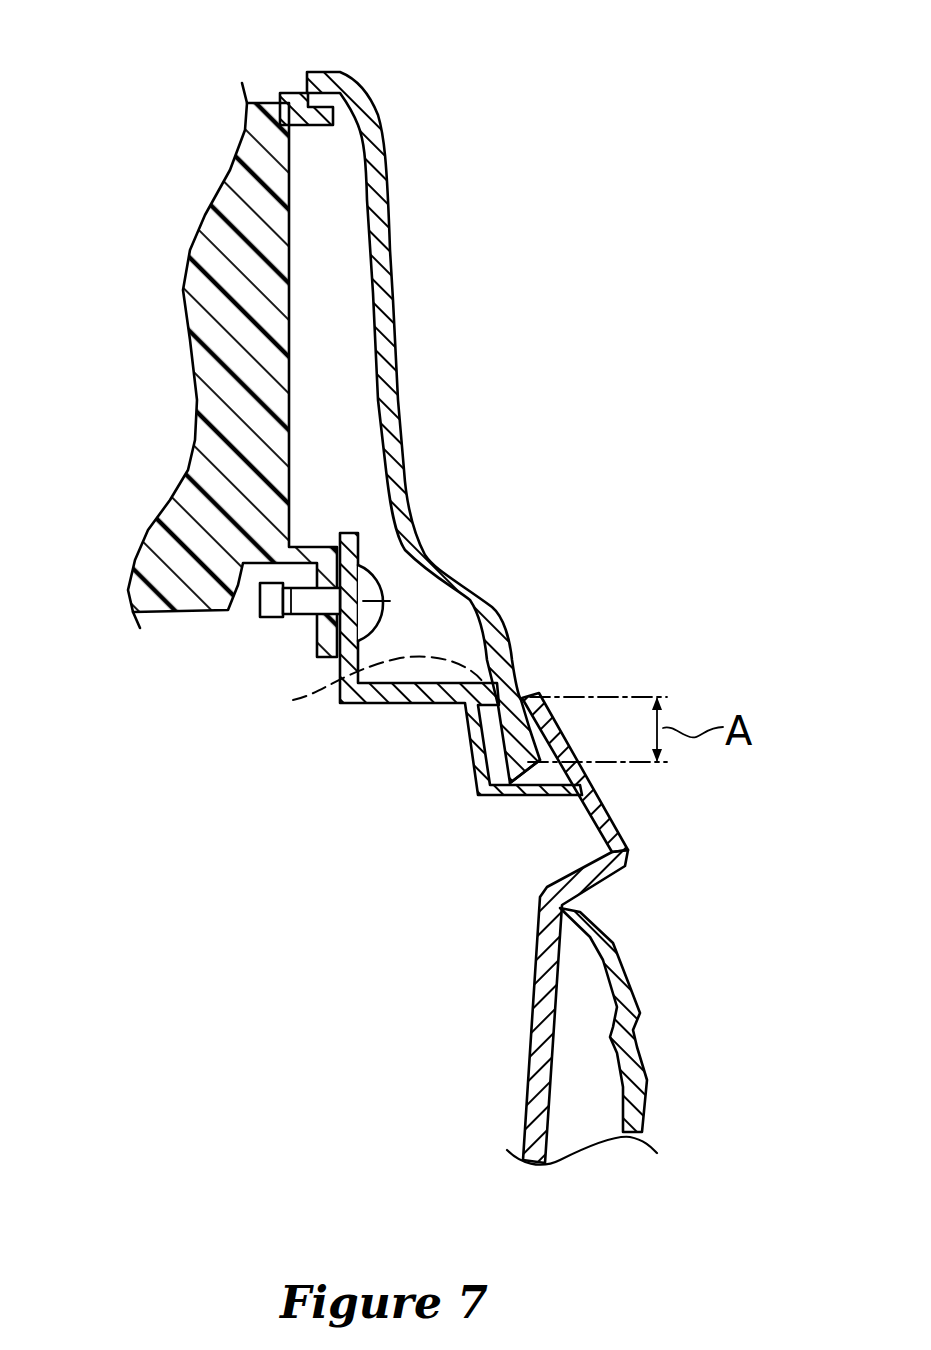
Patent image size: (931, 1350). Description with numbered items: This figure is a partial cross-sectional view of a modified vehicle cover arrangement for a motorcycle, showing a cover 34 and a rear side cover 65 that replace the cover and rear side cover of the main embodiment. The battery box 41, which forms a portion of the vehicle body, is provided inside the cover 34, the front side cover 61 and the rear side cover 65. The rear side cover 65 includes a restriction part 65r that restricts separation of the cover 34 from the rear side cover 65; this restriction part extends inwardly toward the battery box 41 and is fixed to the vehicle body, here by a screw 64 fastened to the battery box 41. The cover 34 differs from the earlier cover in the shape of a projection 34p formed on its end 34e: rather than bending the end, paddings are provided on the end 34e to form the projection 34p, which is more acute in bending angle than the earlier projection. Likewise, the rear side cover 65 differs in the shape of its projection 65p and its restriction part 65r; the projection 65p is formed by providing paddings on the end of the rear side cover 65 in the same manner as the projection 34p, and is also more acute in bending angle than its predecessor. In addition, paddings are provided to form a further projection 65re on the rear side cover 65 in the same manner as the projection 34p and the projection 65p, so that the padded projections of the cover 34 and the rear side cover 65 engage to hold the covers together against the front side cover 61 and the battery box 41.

The battery box 41 is at (275, 103).
The cover 34 is at (398, 401).
The end 34e is at (508, 775).
The projection 34p is at (580, 682).
The screw 64 is at (365, 603).
The rear side cover 65 is at (620, 870).
The projection 65p is at (533, 680).
The restriction part 65r is at (466, 730).
The projection 65re is at (350, 686).
The front side cover 61 is at (637, 1028).